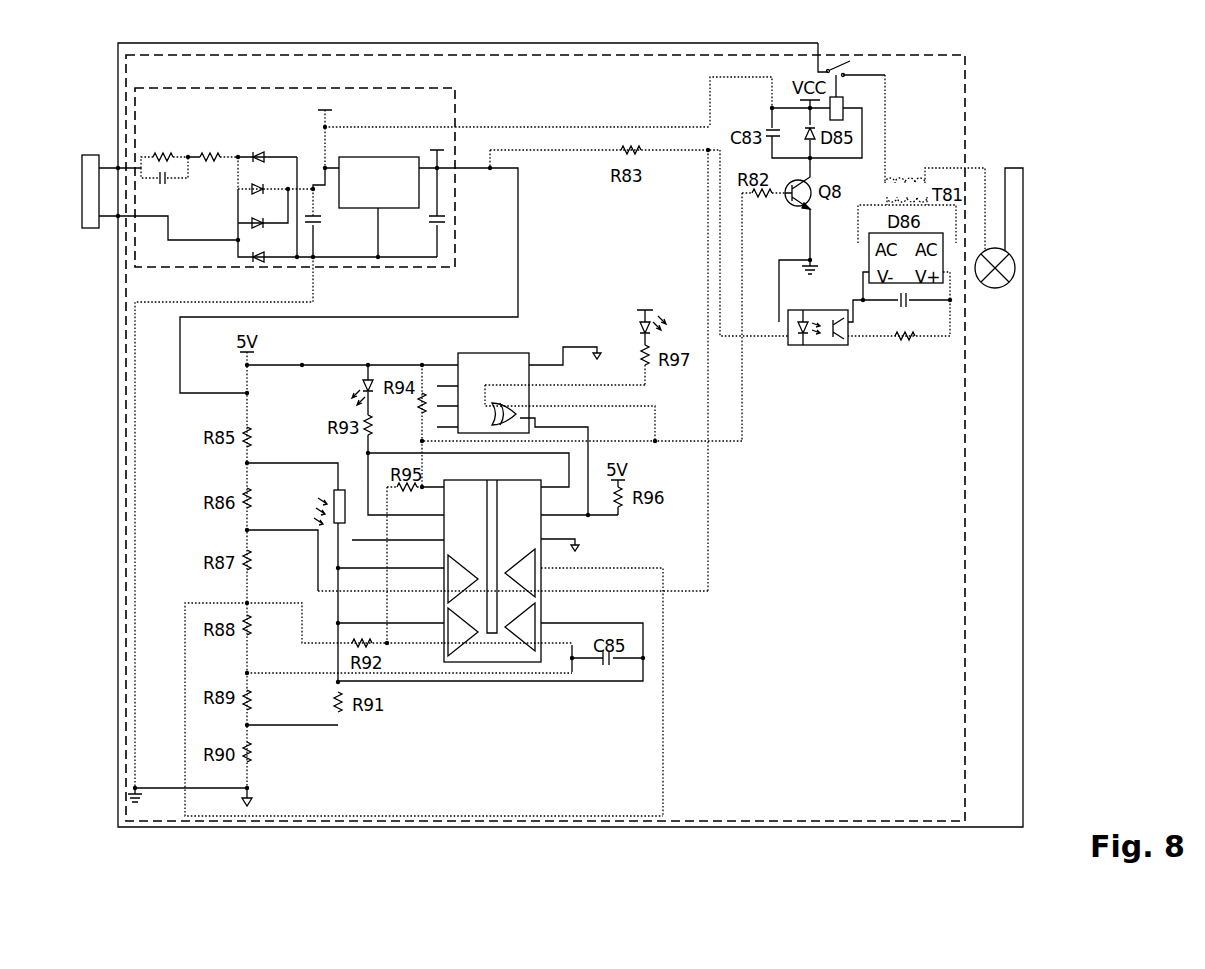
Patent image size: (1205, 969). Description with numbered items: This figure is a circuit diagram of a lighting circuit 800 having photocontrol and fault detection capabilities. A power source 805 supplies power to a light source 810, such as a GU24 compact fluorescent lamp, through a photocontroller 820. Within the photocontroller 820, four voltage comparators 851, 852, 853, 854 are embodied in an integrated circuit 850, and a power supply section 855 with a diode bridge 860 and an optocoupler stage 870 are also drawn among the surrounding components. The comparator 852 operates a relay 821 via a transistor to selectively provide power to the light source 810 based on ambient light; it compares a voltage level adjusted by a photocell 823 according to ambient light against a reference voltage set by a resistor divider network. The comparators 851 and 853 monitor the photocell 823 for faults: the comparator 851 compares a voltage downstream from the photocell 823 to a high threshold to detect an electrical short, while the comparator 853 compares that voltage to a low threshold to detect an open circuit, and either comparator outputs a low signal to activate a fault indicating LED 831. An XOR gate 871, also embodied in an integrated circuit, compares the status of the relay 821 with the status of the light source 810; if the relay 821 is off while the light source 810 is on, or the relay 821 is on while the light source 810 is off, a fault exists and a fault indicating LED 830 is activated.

The lighting circuit 800 is at (1064, 52).
The power source 805 is at (87, 152).
The light source 810 is at (1001, 293).
The photocontroller 820 is at (646, 57).
The relay 821 is at (866, 63).
The photocell 823 is at (335, 487).
The fault indicating LED 830 is at (638, 333).
The fault indicating LED 831 is at (365, 378).
The operational amplifier IC 850 is at (523, 634).
The voltage comparator 851 is at (470, 543).
The voltage comparator 852 is at (465, 650).
The voltage comparator 853 is at (522, 648).
The voltage comparator 854 is at (527, 568).
The power supply circuit 855 is at (218, 87).
The diode bridge rectifier 860 is at (247, 126).
The optocoupler circuit 870 is at (866, 351).
The XOR gate 871 is at (476, 354).